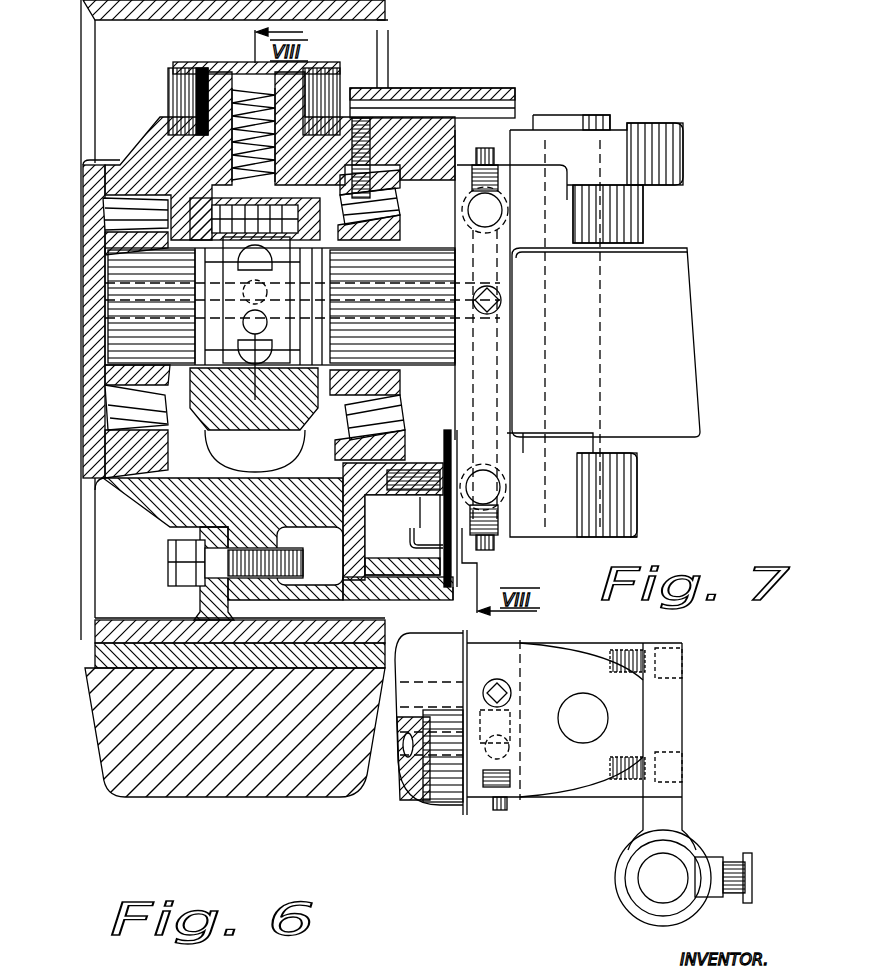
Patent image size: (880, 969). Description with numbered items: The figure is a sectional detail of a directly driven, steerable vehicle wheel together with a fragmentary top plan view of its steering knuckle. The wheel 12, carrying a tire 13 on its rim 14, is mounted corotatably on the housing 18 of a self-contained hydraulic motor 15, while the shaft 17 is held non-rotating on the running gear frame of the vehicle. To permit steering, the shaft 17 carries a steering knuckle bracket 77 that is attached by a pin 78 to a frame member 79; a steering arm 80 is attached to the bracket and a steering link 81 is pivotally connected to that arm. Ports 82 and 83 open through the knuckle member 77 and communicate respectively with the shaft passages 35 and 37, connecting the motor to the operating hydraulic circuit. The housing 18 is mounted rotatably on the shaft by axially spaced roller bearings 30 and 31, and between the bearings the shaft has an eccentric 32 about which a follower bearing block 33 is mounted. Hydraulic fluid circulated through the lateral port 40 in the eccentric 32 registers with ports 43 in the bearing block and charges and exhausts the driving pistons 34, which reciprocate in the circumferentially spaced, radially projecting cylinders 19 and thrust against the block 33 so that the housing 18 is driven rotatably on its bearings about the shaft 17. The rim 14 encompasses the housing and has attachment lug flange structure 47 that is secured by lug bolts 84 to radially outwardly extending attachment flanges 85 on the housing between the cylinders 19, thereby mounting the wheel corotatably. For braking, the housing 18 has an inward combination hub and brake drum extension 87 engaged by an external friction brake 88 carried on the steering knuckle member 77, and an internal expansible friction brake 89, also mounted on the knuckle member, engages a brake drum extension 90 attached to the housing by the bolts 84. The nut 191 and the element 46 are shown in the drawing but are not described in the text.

In FIG. 6, the lock nut 191 is at (170, 102).
In FIG. 6, the driving pistons 34 is at (213, 140).
In FIG. 6, the eccentric 32 is at (220, 243).
In FIG. 6, the roller bearing 31 is at (125, 235).
In FIG. 6, the combination hub and brake drum extension 87 is at (357, 140).
In FIG. 6, the external friction brake 88 is at (400, 87).
In FIG. 6, the pin 78 is at (572, 113).
In FIG. 6, the port 82 is at (487, 203).
In FIG. 6, the roller bearing 30 is at (383, 203).
In FIG. 6, the steering knuckle bracket 77 is at (623, 223).
In FIG. 7, the steering knuckle bracket 77 is at (547, 697).
In FIG. 6, the frame member 79 is at (673, 303).
In FIG. 6, the ports 43 is at (305, 275).
In FIG. 6, the lateral port 40 is at (358, 285).
In FIG. 6, the shaft 17 is at (440, 260).
In FIG. 7, the shaft 17 is at (443, 780).
In FIG. 6, the ball 46 is at (260, 318).
In FIG. 6, the duct 37 is at (367, 300).
In FIG. 6, the duct 35 is at (400, 283).
In FIG. 6, the follower bearing block 33 is at (210, 410).
In FIG. 6, the port 83 is at (487, 488).
In FIG. 6, the motor 15 is at (110, 513).
In FIG. 6, the housing 18 is at (160, 497).
In FIG. 6, the cylinders 19 is at (177, 533).
In FIG. 6, the lug bolts 84 is at (210, 557).
In FIG. 6, the attachment lug flange structure 47 is at (213, 593).
In FIG. 6, the rim 14 is at (100, 630).
In FIG. 6, the wheel 12 is at (83, 723).
In FIG. 6, the tire 13 is at (133, 767).
In FIG. 6, the expansible friction brake 89 is at (400, 560).
In FIG. 6, the attachment flanges 85 is at (327, 573).
In FIG. 6, the brake drum extension 90 is at (408, 590).
In FIG. 7, the steering arm 80 is at (670, 827).
In FIG. 7, the steering link 81 is at (707, 867).